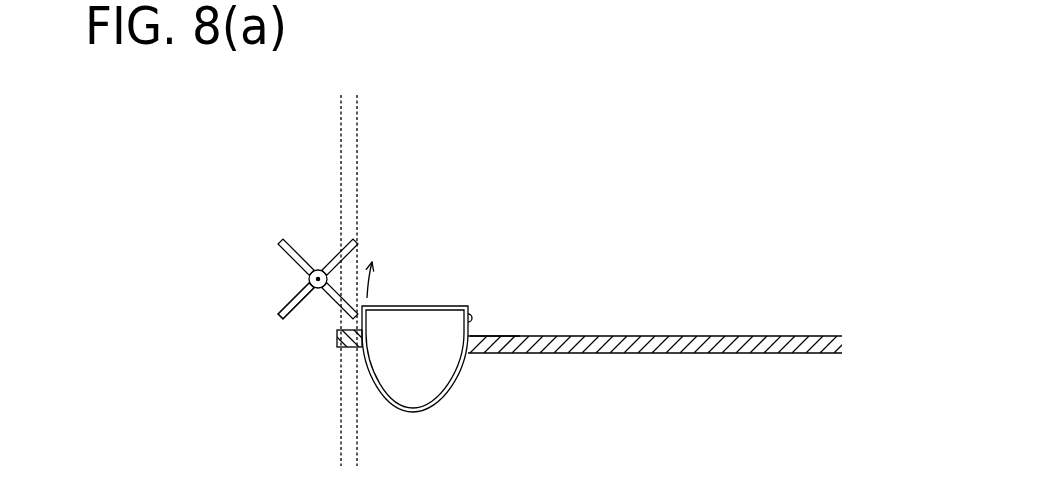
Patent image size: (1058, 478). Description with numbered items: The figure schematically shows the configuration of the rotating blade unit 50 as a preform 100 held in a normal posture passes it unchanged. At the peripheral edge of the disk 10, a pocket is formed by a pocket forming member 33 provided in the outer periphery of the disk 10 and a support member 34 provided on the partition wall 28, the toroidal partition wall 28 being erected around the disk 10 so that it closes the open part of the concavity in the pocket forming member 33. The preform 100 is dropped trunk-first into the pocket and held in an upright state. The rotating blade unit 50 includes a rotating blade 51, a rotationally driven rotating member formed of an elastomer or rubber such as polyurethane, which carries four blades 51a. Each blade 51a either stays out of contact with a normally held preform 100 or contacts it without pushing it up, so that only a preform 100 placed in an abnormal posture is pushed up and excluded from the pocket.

The disk 10 is at (540, 359).
The partition wall 28 is at (338, 124).
The pocket forming member 33 is at (497, 336).
The support member 34 is at (347, 350).
The rotating blade unit 50 is at (461, 229).
The rotating blade 51 is at (279, 281).
The blade 51a is at (291, 316).
The preform 100 is at (455, 385).